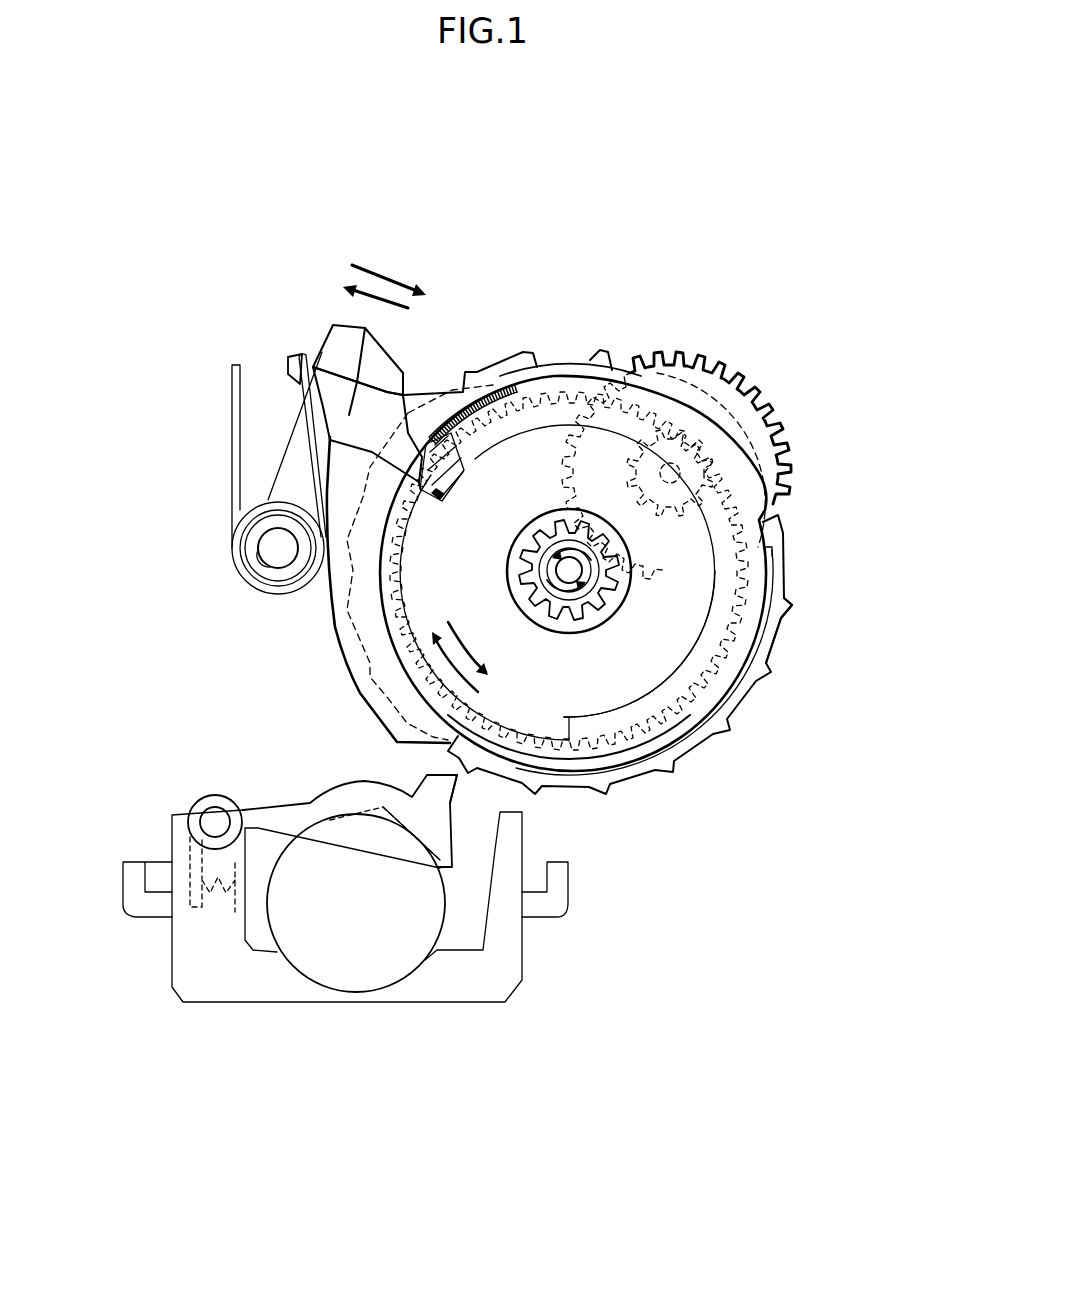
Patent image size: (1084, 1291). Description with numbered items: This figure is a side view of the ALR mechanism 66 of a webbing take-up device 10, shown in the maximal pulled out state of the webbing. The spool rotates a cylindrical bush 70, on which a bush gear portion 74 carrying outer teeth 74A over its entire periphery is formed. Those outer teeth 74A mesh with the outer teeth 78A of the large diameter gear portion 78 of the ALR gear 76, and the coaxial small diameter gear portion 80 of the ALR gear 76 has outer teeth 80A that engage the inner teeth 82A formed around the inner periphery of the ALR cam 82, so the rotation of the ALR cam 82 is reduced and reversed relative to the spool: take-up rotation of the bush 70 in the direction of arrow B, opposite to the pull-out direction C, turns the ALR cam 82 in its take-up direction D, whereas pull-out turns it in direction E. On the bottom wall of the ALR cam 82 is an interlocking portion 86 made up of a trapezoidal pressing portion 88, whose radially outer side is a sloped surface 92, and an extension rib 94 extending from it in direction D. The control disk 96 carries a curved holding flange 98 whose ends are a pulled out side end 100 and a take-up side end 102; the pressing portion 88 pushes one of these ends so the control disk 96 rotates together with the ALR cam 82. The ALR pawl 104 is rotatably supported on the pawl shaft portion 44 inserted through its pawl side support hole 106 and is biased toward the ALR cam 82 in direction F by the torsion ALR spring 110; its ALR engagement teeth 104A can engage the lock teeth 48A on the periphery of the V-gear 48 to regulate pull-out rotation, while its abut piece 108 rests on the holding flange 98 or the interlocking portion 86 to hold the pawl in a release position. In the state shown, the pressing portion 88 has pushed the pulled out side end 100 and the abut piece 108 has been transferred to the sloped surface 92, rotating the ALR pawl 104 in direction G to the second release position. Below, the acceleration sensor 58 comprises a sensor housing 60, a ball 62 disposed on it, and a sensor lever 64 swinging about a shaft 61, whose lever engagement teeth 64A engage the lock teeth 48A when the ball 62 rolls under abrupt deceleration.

The sheet feeding device 10 is at (306, 160).
The ALR mechanism 66 is at (598, 245).
The ALR cam 82 is at (358, 705).
The inner teeth 82A is at (550, 395).
The holding flange 98 is at (578, 752).
The take-up side end 102 is at (620, 763).
The bush gear portion 74 is at (716, 632).
The outer teeth 74A is at (642, 644).
The control disk 96 is at (708, 628).
The bush 70 is at (620, 603).
The V-gear 48 is at (793, 571).
The lock teeth 48A is at (796, 607).
The large diameter gear portion 78 is at (765, 398).
The outer teeth 78A is at (778, 425).
The ALR gear 76 is at (740, 365).
The small diameter gear portion 80 is at (645, 485).
The outer teeth 80A is at (628, 476).
The interlocking portion 86 is at (520, 455).
The extension rib 94 is at (455, 433).
The pressing portion 88 is at (458, 470).
The pulled out side end 100 is at (445, 496).
The sloped surface 92 is at (418, 482).
The ALR pawl 104 is at (333, 325).
The ALR engagement teeth 104A is at (405, 377).
The abut piece 108 is at (330, 453).
The ALR spring 110 is at (231, 523).
The pawl side support hole 106 is at (265, 563).
The pawl shaft portion 44 is at (283, 557).
The acceleration sensor 58 is at (349, 934).
The sensor housing 60 is at (302, 1003).
The shaft 61 is at (212, 812).
The ball 62 is at (440, 930).
The sensor lever 64 is at (335, 792).
The lever engagement teeth 64A is at (458, 777).
The take-up direction B is at (545, 556).
The pull-out direction C is at (560, 592).
The take-up direction of ALR cam D is at (470, 690).
The pull-out direction of ALR cam E is at (490, 668).
The bias direction of ALR pawl F is at (380, 272).
The release direction of ALR pawl G is at (403, 313).